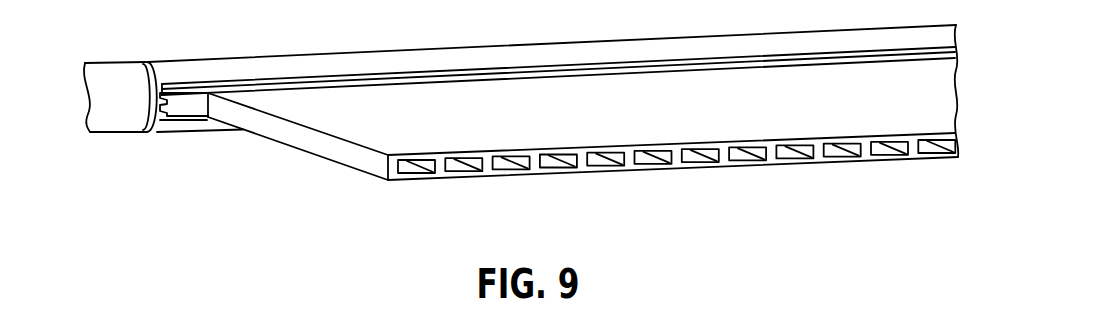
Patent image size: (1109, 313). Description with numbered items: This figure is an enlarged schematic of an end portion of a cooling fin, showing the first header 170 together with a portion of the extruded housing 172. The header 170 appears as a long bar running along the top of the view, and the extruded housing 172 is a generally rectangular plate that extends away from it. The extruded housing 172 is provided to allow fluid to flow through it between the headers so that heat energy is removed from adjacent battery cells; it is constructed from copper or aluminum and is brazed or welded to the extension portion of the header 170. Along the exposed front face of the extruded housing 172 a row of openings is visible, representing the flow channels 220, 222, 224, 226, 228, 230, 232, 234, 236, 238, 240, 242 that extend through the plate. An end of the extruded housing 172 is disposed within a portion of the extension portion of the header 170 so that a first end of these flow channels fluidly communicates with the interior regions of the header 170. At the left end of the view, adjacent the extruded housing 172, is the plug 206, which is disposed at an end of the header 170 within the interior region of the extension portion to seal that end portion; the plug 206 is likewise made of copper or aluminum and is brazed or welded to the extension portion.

The header 170 is at (468, 57).
The extruded housing 172 is at (372, 162).
The plug 206 is at (183, 105).
The flow channel 220 is at (412, 173).
The flow channel 222 is at (459, 171).
The flow channel 224 is at (507, 169).
The flow channel 226 is at (554, 168).
The flow channel 228 is at (601, 166).
The flow channel 230 is at (648, 164).
The flow channel 232 is at (696, 162).
The flow channel 234 is at (743, 160).
The flow channel 236 is at (790, 158).
The flow channel 238 is at (838, 157).
The flow channel 240 is at (885, 155).
The flow channel 242 is at (932, 153).